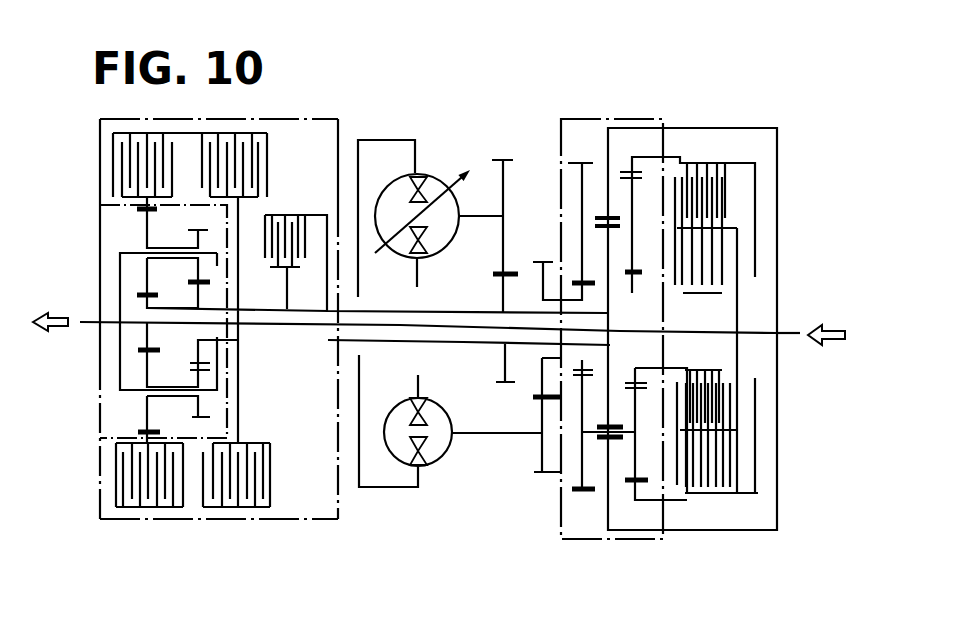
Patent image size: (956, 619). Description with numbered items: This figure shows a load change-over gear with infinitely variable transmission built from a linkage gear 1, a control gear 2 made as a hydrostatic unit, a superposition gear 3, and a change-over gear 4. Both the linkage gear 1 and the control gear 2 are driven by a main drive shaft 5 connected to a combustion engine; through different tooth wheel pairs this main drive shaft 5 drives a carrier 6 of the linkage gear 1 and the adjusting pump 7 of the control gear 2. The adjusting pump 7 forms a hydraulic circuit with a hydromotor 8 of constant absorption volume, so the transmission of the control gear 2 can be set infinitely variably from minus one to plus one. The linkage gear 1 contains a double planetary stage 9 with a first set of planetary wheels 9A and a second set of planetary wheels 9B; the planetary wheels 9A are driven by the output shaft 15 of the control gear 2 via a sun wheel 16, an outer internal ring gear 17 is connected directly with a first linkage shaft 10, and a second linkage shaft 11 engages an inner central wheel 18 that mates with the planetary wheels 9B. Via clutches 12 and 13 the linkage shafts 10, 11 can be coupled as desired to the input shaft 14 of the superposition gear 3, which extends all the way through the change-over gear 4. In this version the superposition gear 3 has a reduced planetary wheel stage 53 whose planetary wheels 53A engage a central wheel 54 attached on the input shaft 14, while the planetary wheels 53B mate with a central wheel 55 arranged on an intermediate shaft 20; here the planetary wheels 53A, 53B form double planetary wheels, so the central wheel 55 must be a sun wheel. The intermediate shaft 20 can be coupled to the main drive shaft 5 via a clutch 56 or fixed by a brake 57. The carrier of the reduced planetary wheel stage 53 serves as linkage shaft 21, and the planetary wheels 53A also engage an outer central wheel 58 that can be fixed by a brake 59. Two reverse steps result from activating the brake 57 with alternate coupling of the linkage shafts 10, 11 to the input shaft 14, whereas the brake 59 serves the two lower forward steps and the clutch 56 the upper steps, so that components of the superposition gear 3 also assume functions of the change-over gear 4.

The linkage gear 1 is at (622, 117).
The control gear 2 is at (465, 132).
The superposition gear 3 is at (128, 233).
The change-over gear 4 is at (290, 118).
The main drive shaft 5 is at (790, 331).
The carrier 6 is at (595, 140).
The adjusting pump 7 is at (437, 233).
The hydromotor 8 is at (437, 437).
The double planetary stage 9 is at (597, 222).
The first set of planetary wheels 9A is at (580, 195).
The second set of planetary wheels 9B is at (630, 198).
The first linkage shaft 10 is at (663, 500).
The second linkage shaft 11 is at (672, 366).
The clutch 12 is at (713, 458).
The clutch 13 is at (705, 400).
The input shaft 14 is at (463, 330).
The output shaft 15 is at (497, 435).
The sun wheel 16 is at (582, 367).
The outer internal ring gear 17 is at (633, 485).
The inner central wheel 18 is at (633, 285).
The intermediate shaft 20 is at (272, 308).
The linkage shaft 21 is at (125, 353).
The reduced planetary wheel stage 53 is at (172, 260).
The planetary wheels of the first stage 53A is at (147, 353).
The planetary wheels of the second stage 53B is at (200, 404).
The central wheel 54 is at (146, 303).
The central wheel 55 is at (196, 287).
The clutch 56 is at (290, 243).
The brake 57 is at (240, 162).
The outer central wheel 58 is at (150, 433).
The brake 59 is at (128, 162).